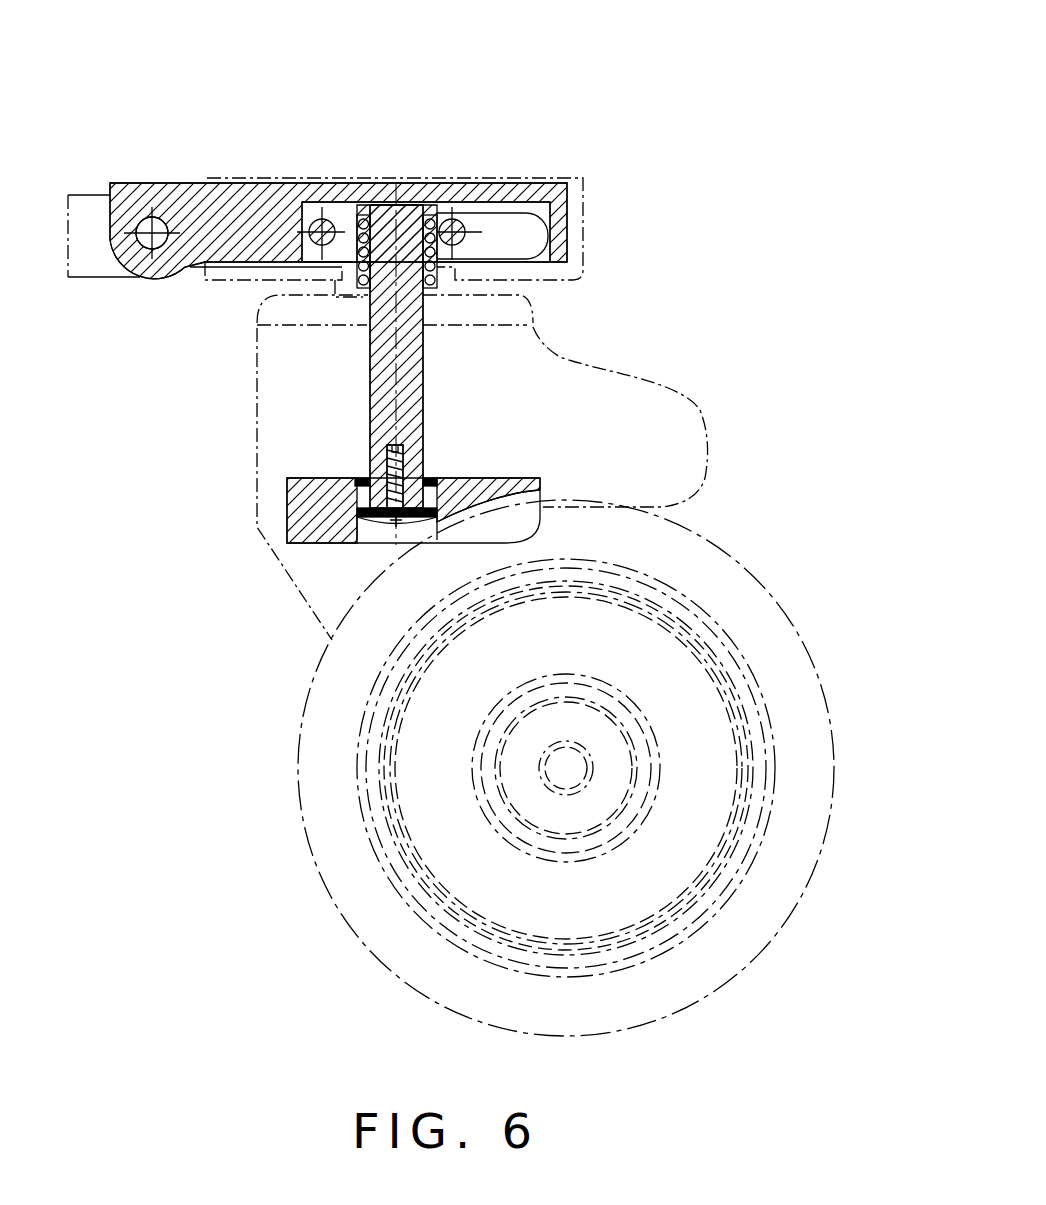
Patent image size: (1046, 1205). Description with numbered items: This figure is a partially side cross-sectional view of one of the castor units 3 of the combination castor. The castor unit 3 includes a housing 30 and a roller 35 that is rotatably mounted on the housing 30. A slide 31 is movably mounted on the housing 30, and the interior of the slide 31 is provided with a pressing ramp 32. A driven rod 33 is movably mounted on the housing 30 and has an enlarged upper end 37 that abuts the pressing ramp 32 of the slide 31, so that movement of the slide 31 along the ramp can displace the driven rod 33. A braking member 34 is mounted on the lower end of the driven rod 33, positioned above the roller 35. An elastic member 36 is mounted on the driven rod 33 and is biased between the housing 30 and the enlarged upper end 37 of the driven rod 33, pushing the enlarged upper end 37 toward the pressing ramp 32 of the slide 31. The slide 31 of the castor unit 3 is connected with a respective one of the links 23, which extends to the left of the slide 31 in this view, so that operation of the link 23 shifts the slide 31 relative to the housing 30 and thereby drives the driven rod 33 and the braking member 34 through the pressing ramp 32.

The castor unit 3 is at (540, 124).
The link 23 is at (97, 200).
The housing 30 is at (693, 398).
The slide 31 is at (232, 195).
The pressing ramp 32 is at (453, 222).
The driven rod 33 is at (370, 374).
The braking member 34 is at (287, 508).
The roller 35 is at (733, 552).
The elastic member 36 is at (424, 297).
The enlarged upper end 37 is at (385, 215).